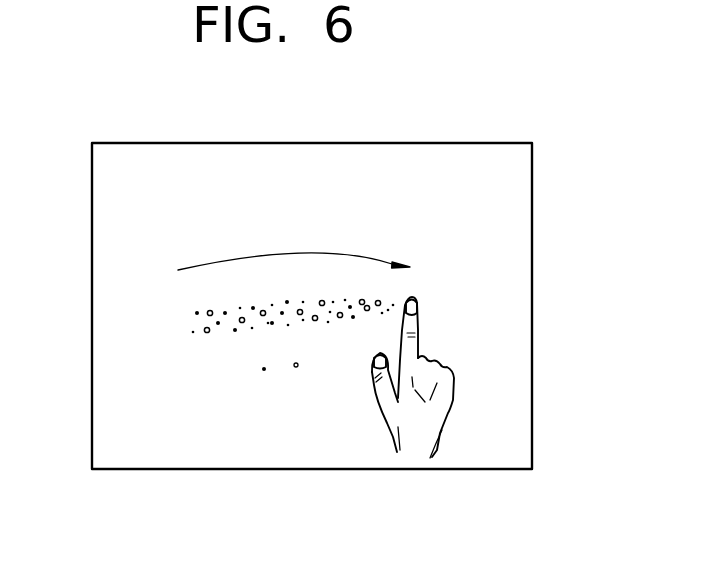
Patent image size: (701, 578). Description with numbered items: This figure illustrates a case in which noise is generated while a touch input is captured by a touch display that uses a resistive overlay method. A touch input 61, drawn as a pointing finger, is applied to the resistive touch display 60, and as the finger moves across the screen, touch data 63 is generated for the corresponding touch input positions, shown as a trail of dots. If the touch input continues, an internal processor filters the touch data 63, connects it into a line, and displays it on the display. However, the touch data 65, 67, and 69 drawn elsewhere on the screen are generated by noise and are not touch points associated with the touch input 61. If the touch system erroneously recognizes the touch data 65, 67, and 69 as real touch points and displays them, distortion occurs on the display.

The resistive touch display 60 is at (516, 469).
The touch input 61 is at (435, 410).
The touch data 63 is at (190, 308).
The touch data generated due to noise 65 is at (330, 228).
The touch data generated due to noise 67 is at (264, 369).
The touch data generated due to noise 69 is at (296, 367).